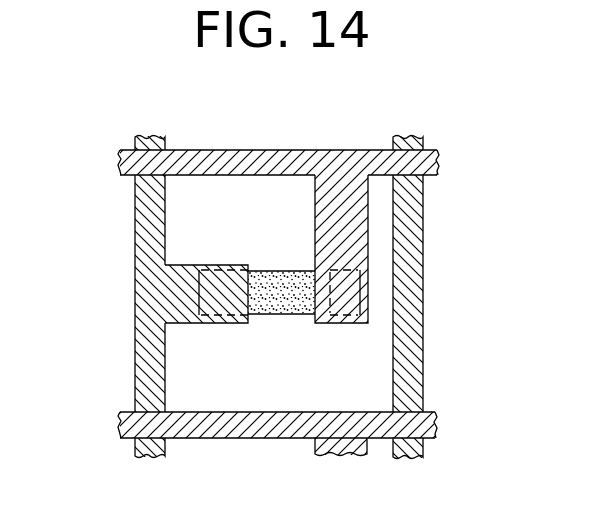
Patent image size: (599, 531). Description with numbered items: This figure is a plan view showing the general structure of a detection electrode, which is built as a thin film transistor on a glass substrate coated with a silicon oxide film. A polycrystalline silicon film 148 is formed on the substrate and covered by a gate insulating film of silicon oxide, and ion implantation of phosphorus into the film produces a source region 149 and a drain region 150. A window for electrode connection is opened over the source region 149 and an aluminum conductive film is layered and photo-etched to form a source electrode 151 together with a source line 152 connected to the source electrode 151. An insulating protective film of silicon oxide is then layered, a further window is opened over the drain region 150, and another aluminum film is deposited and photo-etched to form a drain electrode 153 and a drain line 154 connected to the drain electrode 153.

The polycrystalline silicon film 148 is at (278, 300).
The source region 149 is at (360, 283).
The drain region 150 is at (200, 295).
The source electrode 151 is at (343, 323).
The source line 152 is at (333, 150).
The drain electrode 153 is at (216, 323).
The drain line 154 is at (143, 212).